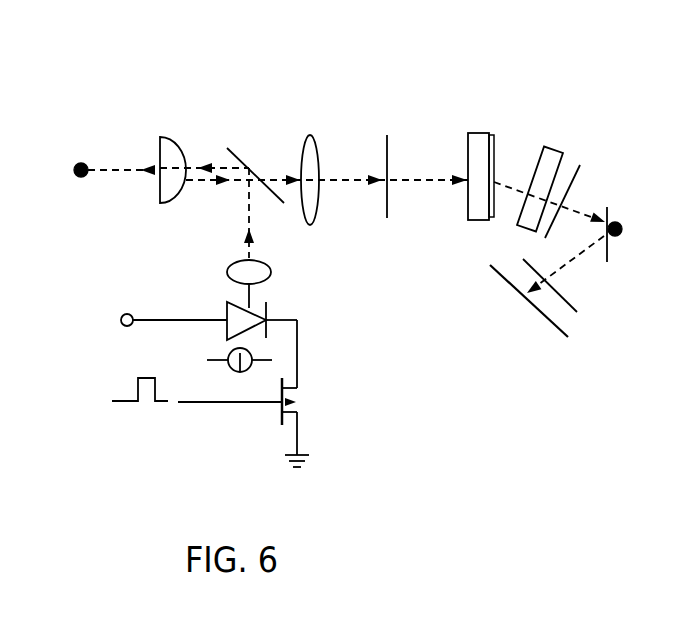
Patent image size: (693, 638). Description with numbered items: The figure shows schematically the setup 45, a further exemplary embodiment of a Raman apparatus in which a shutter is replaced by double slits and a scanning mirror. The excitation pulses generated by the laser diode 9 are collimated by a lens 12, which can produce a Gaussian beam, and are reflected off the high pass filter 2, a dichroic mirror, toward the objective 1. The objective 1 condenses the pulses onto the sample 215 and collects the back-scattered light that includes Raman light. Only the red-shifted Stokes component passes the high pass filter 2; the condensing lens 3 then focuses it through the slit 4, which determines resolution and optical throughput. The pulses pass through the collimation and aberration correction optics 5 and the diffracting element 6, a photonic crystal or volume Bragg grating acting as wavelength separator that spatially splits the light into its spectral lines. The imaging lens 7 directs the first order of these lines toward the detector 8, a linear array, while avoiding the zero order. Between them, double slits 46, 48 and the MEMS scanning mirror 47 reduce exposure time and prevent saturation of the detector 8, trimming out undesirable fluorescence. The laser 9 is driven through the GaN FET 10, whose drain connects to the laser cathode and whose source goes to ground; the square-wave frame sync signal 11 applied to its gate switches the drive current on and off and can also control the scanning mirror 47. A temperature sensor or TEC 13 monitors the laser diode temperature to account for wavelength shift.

The setup 45 is at (74, 54).
The sample 215 is at (81, 178).
The objective 1 is at (160, 147).
The high pass filter 2 is at (236, 150).
The condensing lens 3 is at (310, 135).
The slit 4 is at (387, 135).
The collimation and aberration correction optics 5 is at (478, 133).
The diffracting element 6 is at (494, 141).
The imaging lens 7 is at (553, 155).
The double slit 46 is at (576, 178).
The scanning mirror 47 is at (624, 231).
The double slit 48 is at (572, 300).
The detector 8 is at (563, 338).
The laser 9 is at (232, 300).
The lens 12 is at (272, 272).
The frame sync signal 11 is at (112, 401).
The temperature sensor or TEC 13 is at (240, 372).
The GaN FET 10 is at (299, 414).